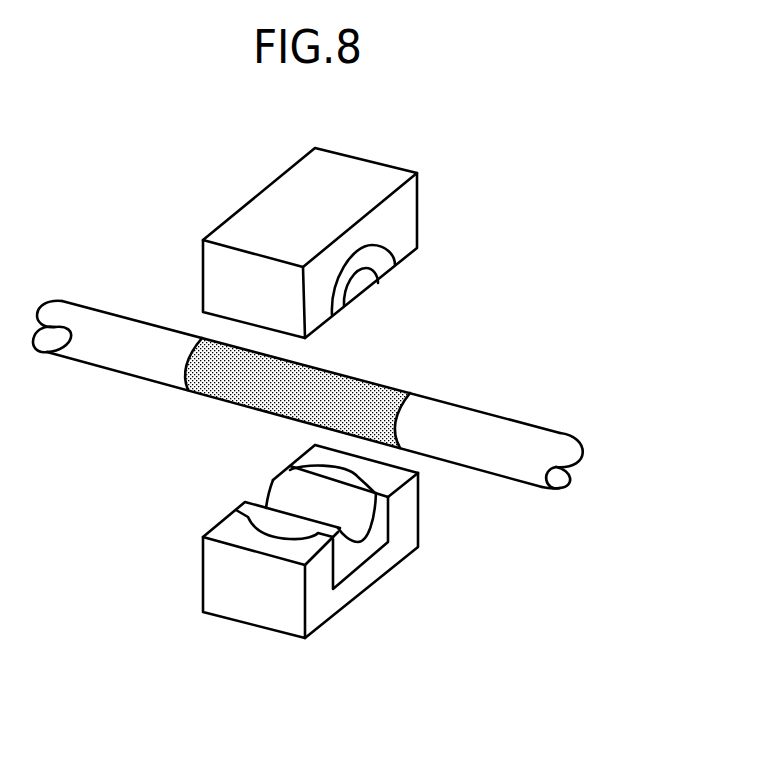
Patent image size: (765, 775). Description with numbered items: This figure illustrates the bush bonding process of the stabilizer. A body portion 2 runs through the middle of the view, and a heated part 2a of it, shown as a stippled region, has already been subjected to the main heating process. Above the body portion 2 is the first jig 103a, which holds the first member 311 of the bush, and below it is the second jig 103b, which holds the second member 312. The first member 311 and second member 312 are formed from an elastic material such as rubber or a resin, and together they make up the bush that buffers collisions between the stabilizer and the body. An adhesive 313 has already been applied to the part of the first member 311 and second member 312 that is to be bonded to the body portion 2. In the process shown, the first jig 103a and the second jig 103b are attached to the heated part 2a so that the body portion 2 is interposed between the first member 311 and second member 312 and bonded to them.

The first jig 103a is at (383, 178).
The first member 311 is at (380, 268).
The body portion 2 is at (526, 433).
The heated part 2a is at (198, 410).
The second jig 103b is at (218, 577).
The second member 312 is at (343, 560).
The adhesive 313 is at (360, 523).